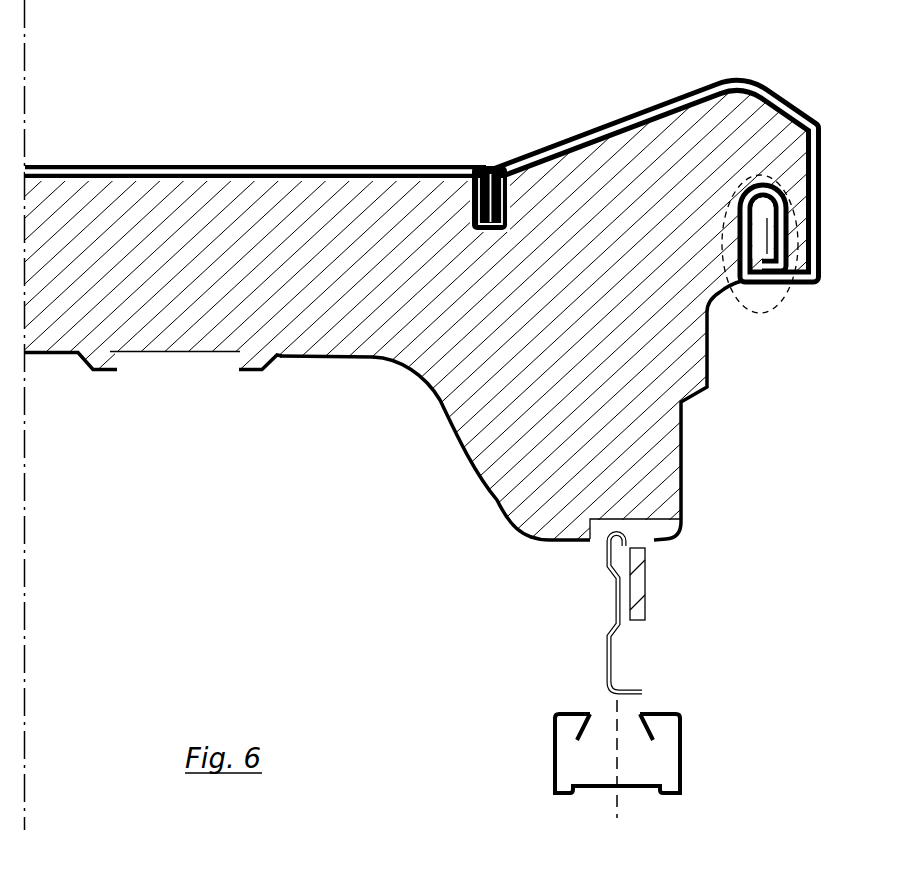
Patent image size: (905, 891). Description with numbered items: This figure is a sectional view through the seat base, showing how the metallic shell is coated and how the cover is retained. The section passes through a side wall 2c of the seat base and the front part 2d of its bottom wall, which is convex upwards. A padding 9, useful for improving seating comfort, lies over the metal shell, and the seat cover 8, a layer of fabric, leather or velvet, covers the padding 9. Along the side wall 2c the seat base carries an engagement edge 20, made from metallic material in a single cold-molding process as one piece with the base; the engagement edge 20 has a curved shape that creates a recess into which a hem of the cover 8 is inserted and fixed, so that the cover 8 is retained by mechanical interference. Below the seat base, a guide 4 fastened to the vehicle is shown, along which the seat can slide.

The seat cover 8 is at (244, 150).
The padding 9 is at (623, 183).
The side wall 2c is at (452, 452).
The front part of the bottom wall 2d is at (329, 372).
The engagement edge 20 is at (780, 314).
The guide 4 is at (539, 752).